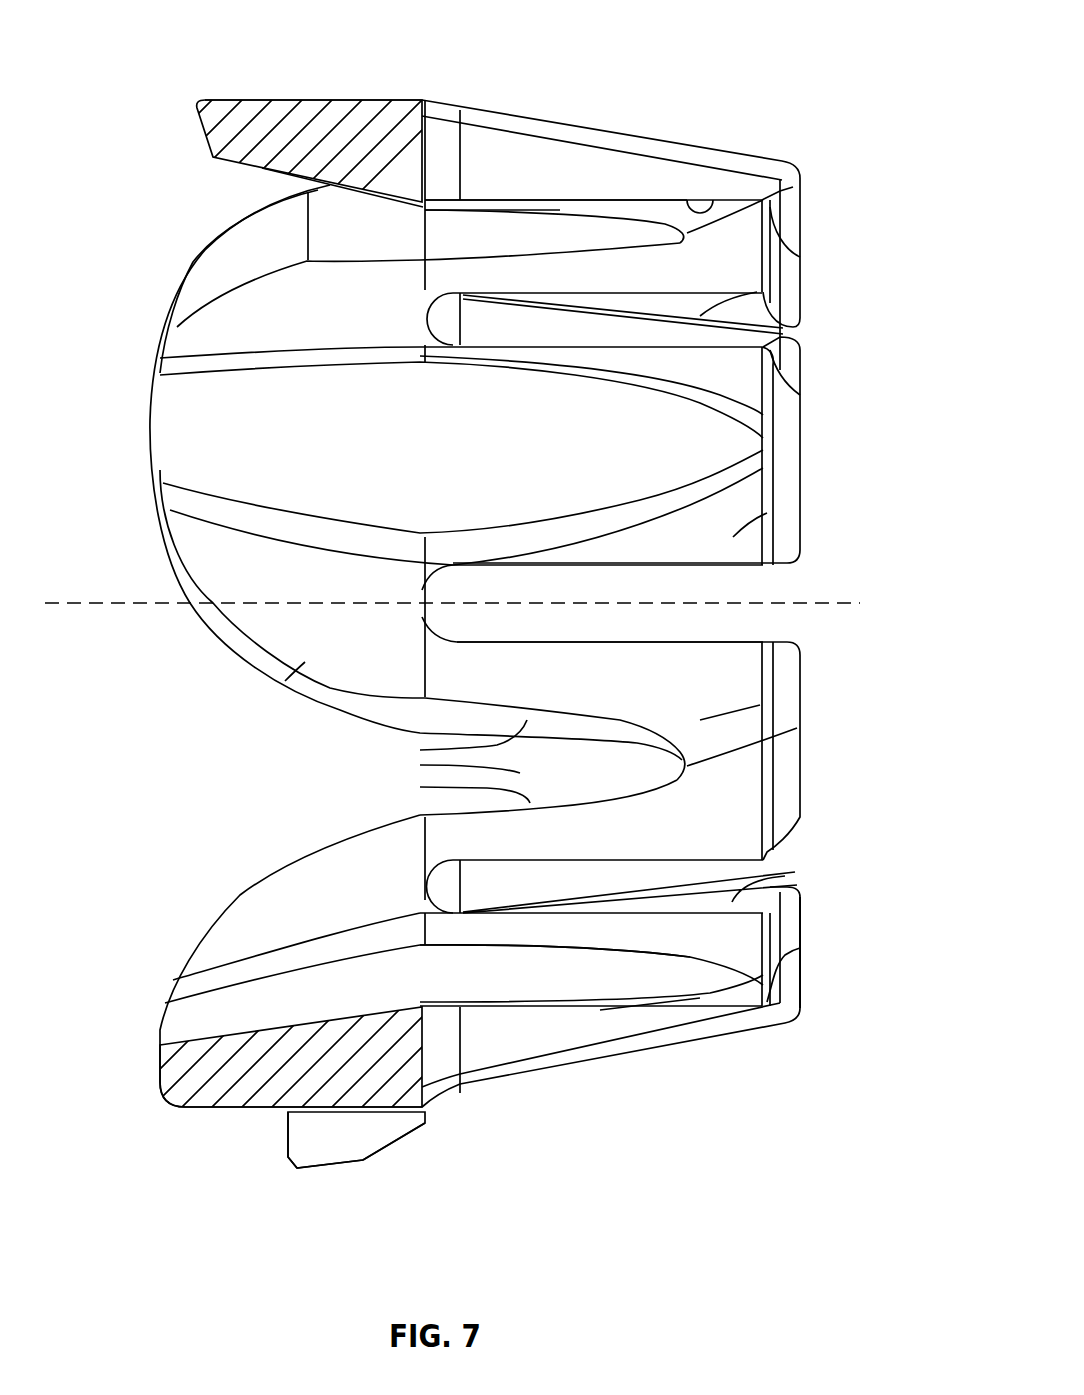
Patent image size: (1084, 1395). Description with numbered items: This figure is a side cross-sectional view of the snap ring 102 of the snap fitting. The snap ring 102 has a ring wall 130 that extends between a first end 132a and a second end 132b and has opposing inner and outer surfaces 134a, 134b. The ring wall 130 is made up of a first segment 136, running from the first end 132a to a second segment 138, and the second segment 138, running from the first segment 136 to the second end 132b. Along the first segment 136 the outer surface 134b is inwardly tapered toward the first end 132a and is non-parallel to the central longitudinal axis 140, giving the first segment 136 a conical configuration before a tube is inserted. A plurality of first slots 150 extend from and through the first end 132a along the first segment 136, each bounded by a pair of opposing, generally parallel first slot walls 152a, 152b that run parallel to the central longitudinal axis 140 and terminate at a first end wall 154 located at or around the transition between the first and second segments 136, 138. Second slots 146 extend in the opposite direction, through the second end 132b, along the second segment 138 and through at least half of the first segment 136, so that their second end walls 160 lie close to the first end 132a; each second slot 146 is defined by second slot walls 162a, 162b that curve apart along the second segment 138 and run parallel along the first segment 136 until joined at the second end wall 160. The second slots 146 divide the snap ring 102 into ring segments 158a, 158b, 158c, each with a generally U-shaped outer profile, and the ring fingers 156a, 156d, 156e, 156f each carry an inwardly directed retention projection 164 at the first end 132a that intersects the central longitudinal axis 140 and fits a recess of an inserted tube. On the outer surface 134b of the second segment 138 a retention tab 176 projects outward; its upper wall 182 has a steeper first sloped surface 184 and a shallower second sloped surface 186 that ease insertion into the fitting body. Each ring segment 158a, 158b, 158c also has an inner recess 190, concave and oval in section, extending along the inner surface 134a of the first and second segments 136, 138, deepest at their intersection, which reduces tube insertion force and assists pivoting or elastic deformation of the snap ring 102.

The snap ring 102 is at (763, 1122).
The ring wall 130 is at (216, 1093).
The first end 132a is at (803, 1003).
The second end 132b is at (158, 1052).
The inner surface 134a is at (718, 200).
The outer surface 134b is at (532, 150).
The first segment 136 is at (641, 138).
The second segment 138 is at (293, 100).
The central longitudinal axis 140 is at (862, 603).
The second slot 146 is at (487, 242).
The first slot 150 is at (762, 293).
The first slot wall 152a is at (680, 570).
The first slot wall 152b is at (670, 642).
The first end wall 154 is at (300, 662).
The ring finger 156a is at (670, 1032).
The ring finger 156d is at (565, 165).
The ring finger 156e is at (735, 537).
The ring finger 156f is at (730, 717).
The ring segment 158a is at (222, 100).
The ring segment 158b is at (177, 320).
The ring segment 158c is at (195, 968).
The second end wall 160 is at (793, 187).
The second slot wall 162a is at (500, 748).
The second slot wall 162b is at (267, 207).
The retention projection 164 is at (777, 305).
The retention tab 176 is at (352, 1132).
The upper wall 182 is at (363, 1163).
The first sloped surface 184 is at (390, 1150).
The second sloped surface 186 is at (315, 1165).
The inner recess 190 is at (197, 455).